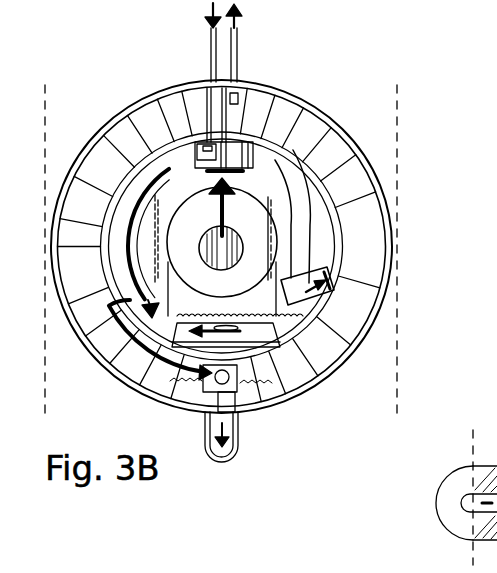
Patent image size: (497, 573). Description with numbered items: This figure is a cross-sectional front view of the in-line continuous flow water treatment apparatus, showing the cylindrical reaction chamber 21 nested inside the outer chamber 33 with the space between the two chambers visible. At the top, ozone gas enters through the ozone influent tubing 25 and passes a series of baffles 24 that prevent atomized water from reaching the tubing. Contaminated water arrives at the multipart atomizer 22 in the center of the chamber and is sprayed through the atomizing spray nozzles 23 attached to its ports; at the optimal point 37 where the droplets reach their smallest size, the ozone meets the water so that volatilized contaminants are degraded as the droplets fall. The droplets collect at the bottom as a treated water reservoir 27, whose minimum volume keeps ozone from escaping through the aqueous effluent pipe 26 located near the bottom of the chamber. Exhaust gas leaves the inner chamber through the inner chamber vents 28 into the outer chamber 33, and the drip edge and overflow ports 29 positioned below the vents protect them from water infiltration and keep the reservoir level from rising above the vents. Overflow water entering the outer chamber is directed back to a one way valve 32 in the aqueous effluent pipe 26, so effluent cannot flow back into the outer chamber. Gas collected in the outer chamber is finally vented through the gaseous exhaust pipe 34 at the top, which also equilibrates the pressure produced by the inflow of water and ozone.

The cylindrical reaction chamber 21 is at (273, 142).
The multipart atomizer 22 is at (262, 248).
The atomizing spray nozzles 23 is at (232, 190).
The baffles 24 is at (253, 157).
The ozone influent tubing 25 is at (209, 56).
The aqueous effluent pipe 26 is at (247, 343).
The treated water reservoir 27 is at (250, 323).
The inner chamber vents 28 is at (334, 287).
The drip edge and overflow ports 29 is at (330, 305).
The one way valve 32 is at (230, 380).
The outer chamber 33 is at (333, 125).
The gaseous exhaust pipe 34 is at (239, 56).
The optimal point of smallest droplet formation size 37 is at (193, 157).